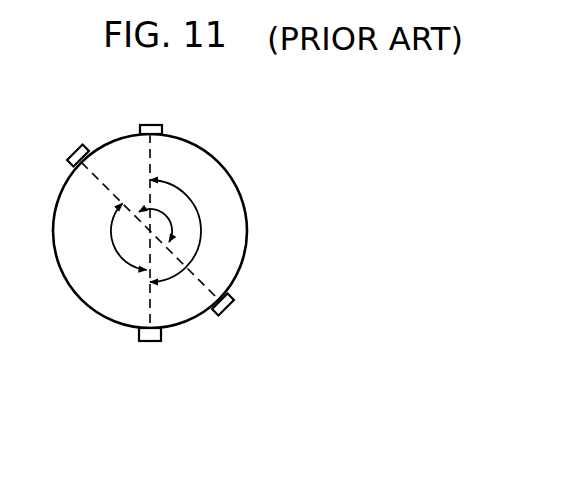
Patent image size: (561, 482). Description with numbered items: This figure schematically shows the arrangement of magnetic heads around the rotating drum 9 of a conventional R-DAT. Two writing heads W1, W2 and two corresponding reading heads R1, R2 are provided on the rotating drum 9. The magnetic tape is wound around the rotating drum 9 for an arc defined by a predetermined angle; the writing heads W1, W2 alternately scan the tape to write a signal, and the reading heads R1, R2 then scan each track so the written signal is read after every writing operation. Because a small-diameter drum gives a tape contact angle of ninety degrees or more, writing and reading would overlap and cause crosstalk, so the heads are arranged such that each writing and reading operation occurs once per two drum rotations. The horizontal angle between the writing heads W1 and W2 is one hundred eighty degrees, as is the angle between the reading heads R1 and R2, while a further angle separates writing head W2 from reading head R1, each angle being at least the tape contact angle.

The rotating drum 9 is at (237, 187).
The writing head W1 is at (149, 112).
The writing head W2 is at (149, 355).
The reading head R1 is at (63, 143).
The reading head R2 is at (236, 323).